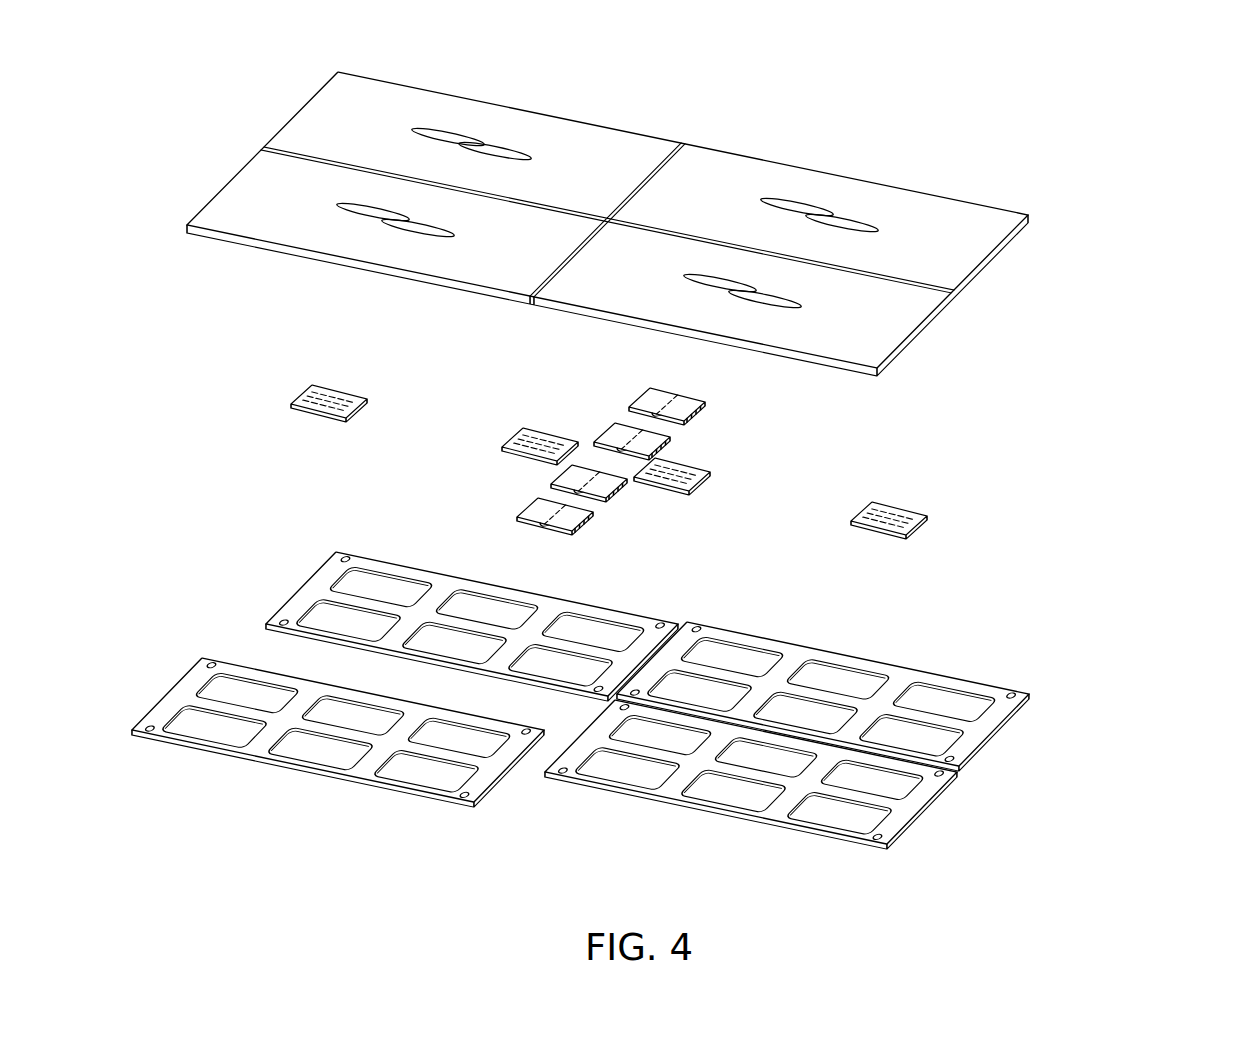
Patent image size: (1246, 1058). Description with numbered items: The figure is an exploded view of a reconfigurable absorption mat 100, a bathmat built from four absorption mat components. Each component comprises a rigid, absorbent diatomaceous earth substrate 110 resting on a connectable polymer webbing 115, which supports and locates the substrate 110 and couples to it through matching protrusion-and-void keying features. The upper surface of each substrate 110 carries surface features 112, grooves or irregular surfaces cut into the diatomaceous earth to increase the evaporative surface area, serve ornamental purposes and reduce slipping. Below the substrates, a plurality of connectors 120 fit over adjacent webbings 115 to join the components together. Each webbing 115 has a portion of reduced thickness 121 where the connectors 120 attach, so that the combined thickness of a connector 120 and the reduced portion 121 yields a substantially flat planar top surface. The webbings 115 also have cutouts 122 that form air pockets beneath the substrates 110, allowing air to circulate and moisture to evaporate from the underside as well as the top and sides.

The reconfigurable absorption mat 100 is at (1103, 57).
The diatomaceous earth substrate 110 is at (530, 112).
The surface features 112 is at (447, 131).
The polymer webbing 115 is at (604, 717).
The connector 120 is at (337, 385).
The portion of reduced thickness 121 is at (193, 755).
The cutout 122 is at (617, 770).